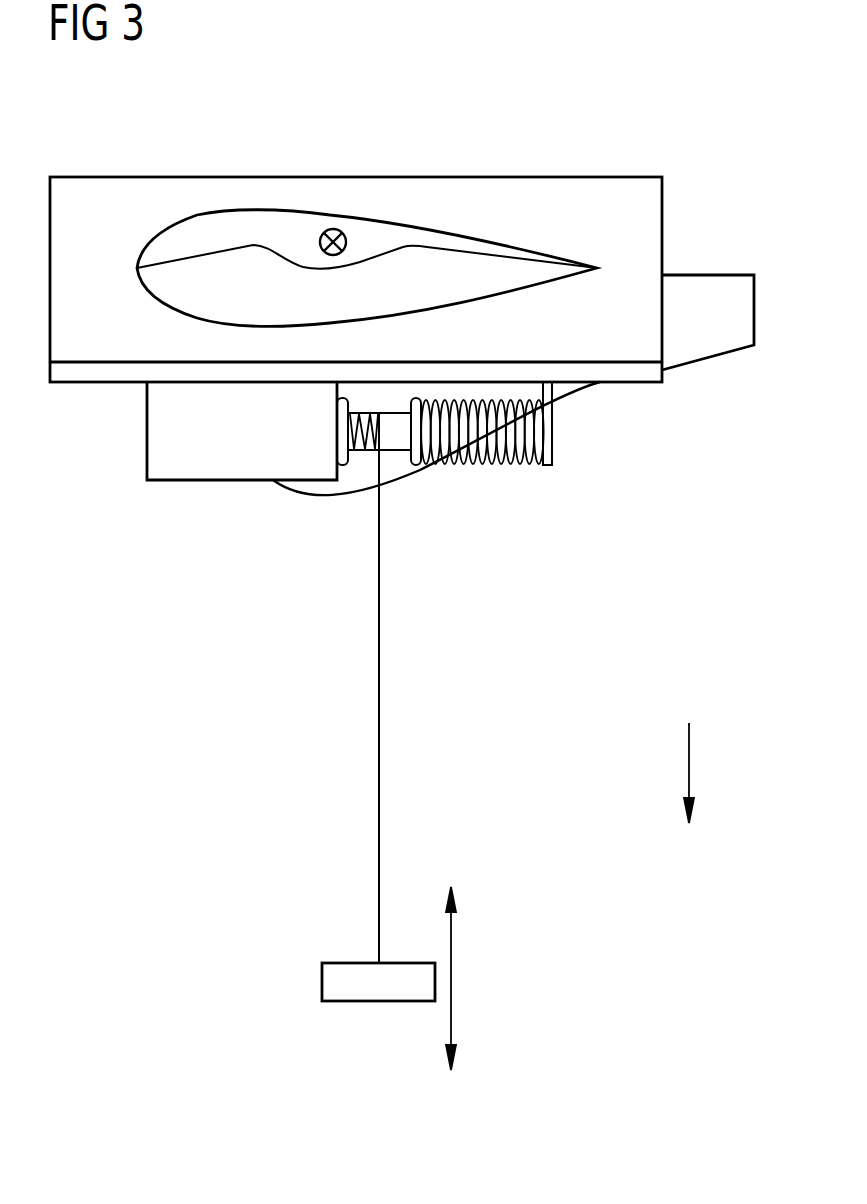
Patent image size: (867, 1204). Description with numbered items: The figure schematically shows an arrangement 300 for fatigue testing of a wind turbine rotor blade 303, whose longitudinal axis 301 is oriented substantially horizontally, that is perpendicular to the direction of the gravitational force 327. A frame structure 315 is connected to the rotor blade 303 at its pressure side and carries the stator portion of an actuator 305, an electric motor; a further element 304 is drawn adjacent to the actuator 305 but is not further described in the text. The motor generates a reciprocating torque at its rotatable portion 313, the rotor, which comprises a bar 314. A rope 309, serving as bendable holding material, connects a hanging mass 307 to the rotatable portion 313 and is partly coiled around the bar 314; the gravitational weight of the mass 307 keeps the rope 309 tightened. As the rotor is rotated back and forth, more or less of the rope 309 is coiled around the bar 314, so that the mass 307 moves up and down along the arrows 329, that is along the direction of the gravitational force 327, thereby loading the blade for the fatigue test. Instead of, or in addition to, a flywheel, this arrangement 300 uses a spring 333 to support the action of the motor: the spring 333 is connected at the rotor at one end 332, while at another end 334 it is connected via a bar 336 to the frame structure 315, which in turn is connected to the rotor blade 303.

The arrangement for fatigue testing 300 is at (560, 643).
The longitudinal axis 301 is at (334, 229).
The rotor blade 303 is at (252, 127).
The housing 304 is at (157, 433).
The actuator 305 is at (228, 522).
The mass 307 is at (322, 980).
The rope 309 is at (380, 805).
The rotatable portion 313 is at (343, 465).
The bar 314 is at (415, 465).
The frame structure 315 is at (536, 185).
The direction of the gravitational force 327 is at (690, 767).
The arrows 329 is at (453, 978).
The one end of the spring 332 is at (425, 470).
The spring 333 is at (545, 507).
The another end of the spring 334 is at (552, 465).
The bar 336 is at (552, 418).